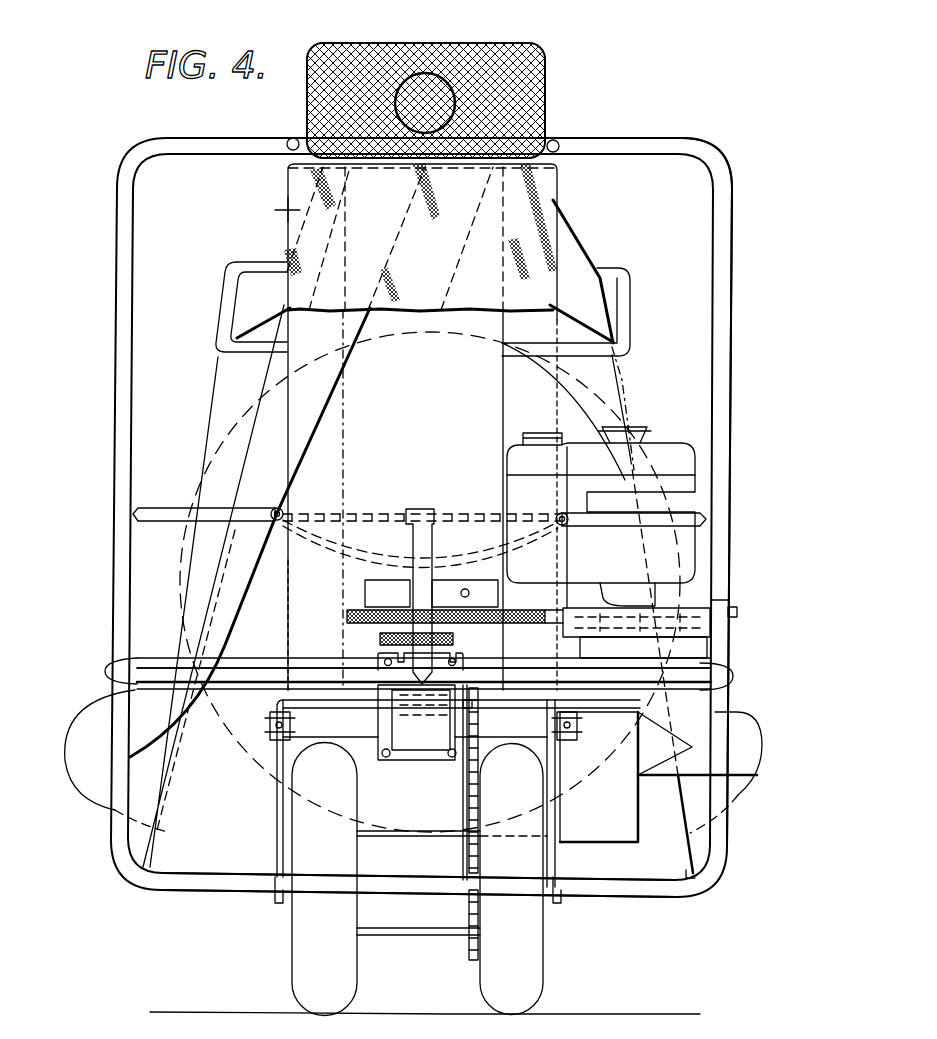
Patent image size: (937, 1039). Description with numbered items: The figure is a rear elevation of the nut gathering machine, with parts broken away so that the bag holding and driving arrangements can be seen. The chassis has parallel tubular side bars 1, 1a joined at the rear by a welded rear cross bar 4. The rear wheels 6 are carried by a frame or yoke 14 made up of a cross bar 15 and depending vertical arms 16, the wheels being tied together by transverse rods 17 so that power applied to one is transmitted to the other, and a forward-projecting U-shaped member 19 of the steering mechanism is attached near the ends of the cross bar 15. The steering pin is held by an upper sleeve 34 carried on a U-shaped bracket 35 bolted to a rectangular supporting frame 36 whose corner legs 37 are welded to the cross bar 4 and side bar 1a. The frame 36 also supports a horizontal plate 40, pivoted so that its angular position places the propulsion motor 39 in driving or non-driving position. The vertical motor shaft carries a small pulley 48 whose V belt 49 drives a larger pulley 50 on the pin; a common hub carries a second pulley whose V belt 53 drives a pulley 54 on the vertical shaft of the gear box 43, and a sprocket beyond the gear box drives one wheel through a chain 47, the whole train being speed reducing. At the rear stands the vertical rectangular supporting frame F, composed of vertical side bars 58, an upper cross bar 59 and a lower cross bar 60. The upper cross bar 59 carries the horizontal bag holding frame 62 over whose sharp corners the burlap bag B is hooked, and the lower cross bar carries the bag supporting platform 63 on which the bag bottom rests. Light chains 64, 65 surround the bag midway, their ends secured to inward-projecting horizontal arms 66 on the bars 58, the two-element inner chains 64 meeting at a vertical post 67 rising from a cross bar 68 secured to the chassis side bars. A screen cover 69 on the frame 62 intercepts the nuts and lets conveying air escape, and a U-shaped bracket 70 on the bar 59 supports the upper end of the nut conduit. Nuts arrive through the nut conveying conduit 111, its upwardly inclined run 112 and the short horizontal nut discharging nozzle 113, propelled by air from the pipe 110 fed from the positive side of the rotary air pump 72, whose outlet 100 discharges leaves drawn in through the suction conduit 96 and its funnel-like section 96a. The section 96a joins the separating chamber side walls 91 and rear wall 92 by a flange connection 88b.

The side bar 1 is at (104, 670).
The side bar 1a is at (735, 680).
The rear cross bar 4 is at (692, 667).
The rear wheels 6 is at (293, 923).
The frame or yoke 14 is at (563, 767).
The cross bar 15 is at (517, 704).
The vertical arms 16 is at (283, 814).
The transverse rods 17 is at (419, 832).
The U-shaped member 19 is at (575, 736).
The upper sleeve 34 is at (407, 596).
The U-shaped bracket 35 is at (463, 597).
The rectangular supporting frame 36 is at (584, 620).
The corner legs 37 is at (570, 652).
The propulsion motor 39 is at (680, 552).
The horizontal plate 40 is at (734, 606).
The gear box 43 is at (422, 742).
The chain 47 is at (479, 810).
The pulley 48 is at (658, 627).
The V belt 49 is at (365, 615).
The pulley 50 is at (350, 617).
The V belt 53 is at (388, 640).
The pulley 54 is at (456, 656).
The vertical side bars 58 is at (118, 476).
The upper cross bar 59 is at (208, 148).
The lower cross bar 60 is at (221, 882).
The bag holding frame 62 is at (286, 171).
The bag supporting platform 63 is at (416, 878).
The light chains 64 is at (440, 520).
The light chains 65 is at (358, 548).
The horizontal arms 66 is at (170, 507).
The vertical post 67 is at (423, 510).
The cross bar 68 is at (315, 678).
The screen cover 69 is at (547, 80).
The U-shaped bracket 70 is at (555, 141).
The rotary air pump 72 is at (618, 829).
The flange connection 88b is at (218, 351).
The side walls 91 is at (620, 378).
The rear wall 92 is at (604, 398).
The suction conduit 96 is at (410, 586).
The funnel-like section 96a is at (563, 230).
The outlet 100 is at (639, 804).
The pipe 110 is at (735, 794).
The nut conveying conduit 111 is at (92, 780).
The upwardly inclined run 112 is at (341, 372).
The nut discharging nozzle 113 is at (402, 44).
The bag B is at (276, 210).
The supporting frame F is at (292, 141).